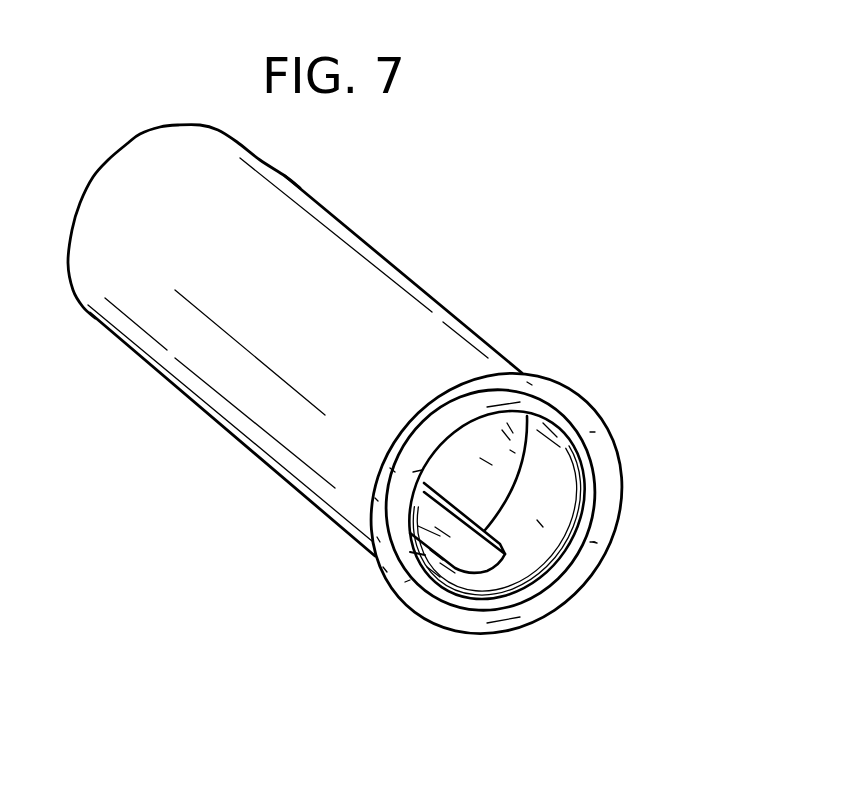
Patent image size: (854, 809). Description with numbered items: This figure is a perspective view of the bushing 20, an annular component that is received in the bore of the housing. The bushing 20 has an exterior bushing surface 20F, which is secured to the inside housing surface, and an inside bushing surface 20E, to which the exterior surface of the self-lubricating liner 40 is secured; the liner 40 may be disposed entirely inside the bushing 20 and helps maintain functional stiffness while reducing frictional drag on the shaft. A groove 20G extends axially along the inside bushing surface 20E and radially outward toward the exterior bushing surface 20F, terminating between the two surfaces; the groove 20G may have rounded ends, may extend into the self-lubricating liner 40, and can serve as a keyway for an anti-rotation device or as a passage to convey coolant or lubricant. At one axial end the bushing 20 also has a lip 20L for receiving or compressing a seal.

The bushing 20 is at (518, 222).
The inside bushing surface 20E is at (503, 469).
The exterior bushing surface 20F is at (227, 403).
The groove 20G is at (457, 547).
The lip 20L is at (375, 492).
The self-lubricating liner 40 is at (540, 540).